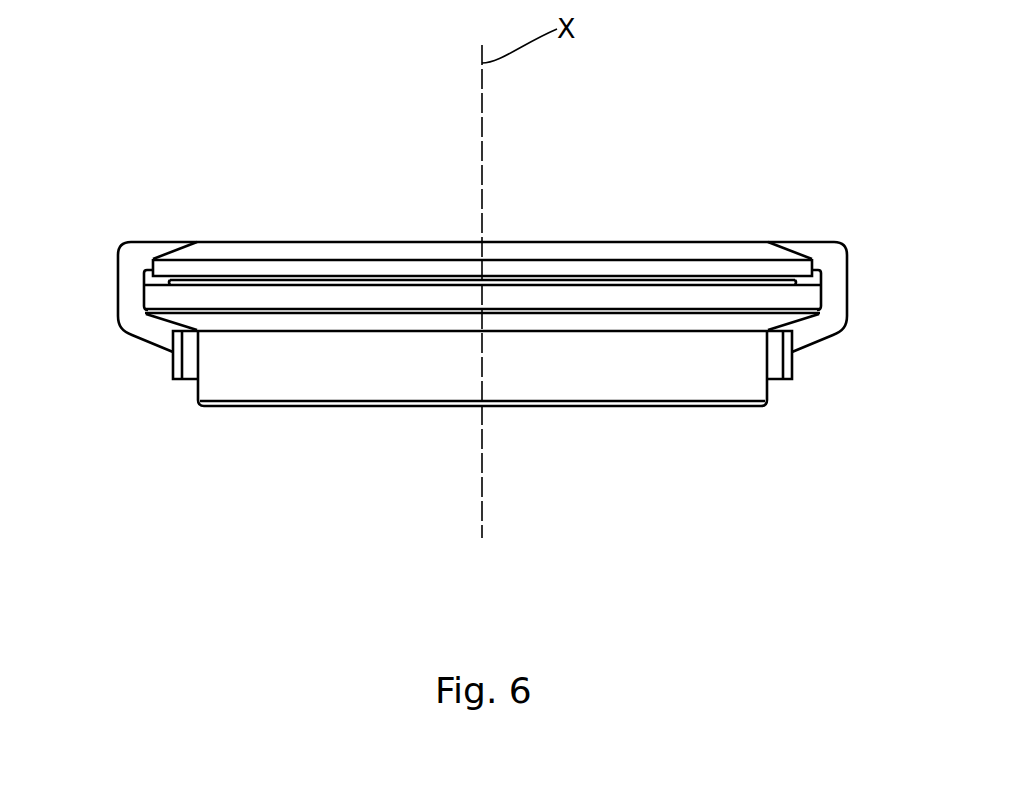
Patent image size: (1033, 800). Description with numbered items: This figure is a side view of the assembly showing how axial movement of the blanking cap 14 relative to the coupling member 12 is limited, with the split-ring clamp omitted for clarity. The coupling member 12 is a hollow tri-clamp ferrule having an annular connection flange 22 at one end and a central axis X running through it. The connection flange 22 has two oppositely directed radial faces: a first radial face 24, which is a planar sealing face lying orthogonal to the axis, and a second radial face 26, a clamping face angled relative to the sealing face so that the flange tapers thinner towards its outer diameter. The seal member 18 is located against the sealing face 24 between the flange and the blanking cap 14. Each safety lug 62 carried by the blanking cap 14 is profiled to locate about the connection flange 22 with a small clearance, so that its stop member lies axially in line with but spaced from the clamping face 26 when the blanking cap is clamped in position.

The coupling member 12 is at (313, 393).
The blanking cap 14 is at (348, 253).
The seal member 18 is at (720, 283).
The connection flange 22 is at (592, 300).
The first radial face 24 is at (537, 283).
The second radial face 26 is at (735, 326).
The safety lug 62 is at (128, 300).